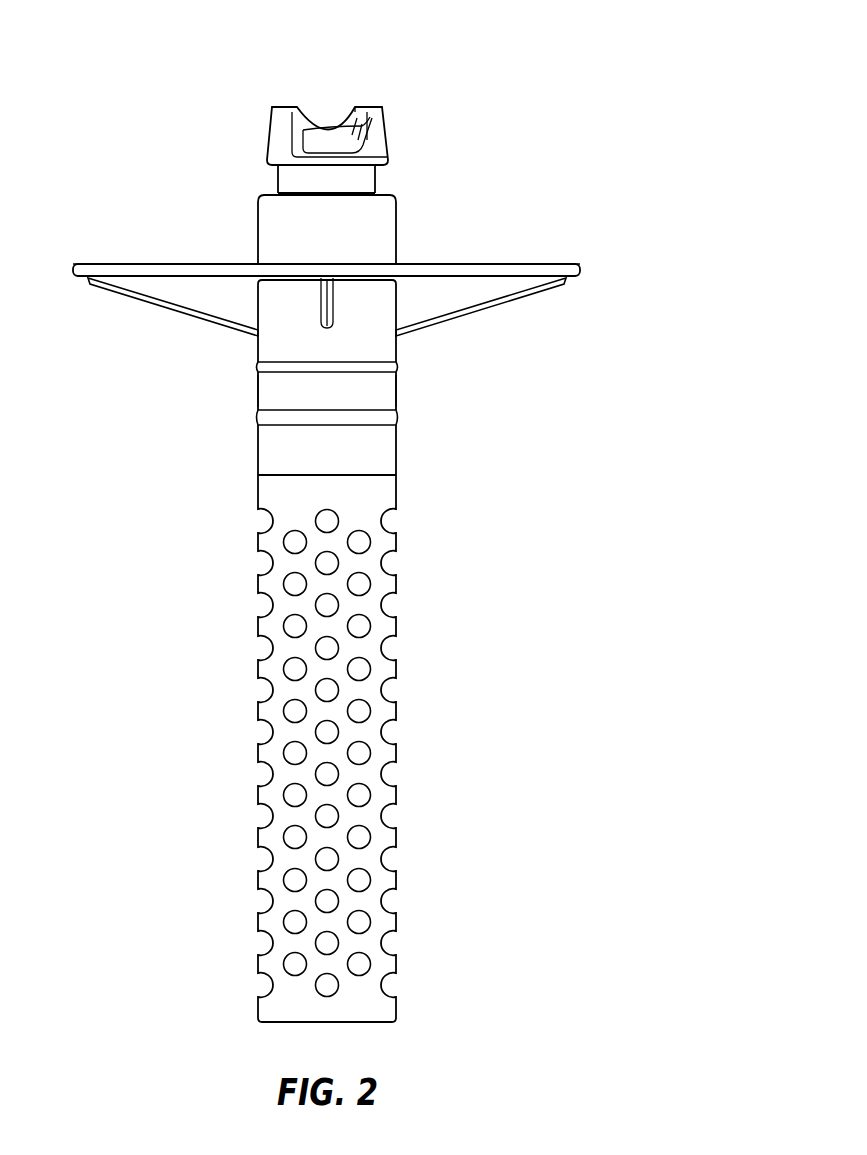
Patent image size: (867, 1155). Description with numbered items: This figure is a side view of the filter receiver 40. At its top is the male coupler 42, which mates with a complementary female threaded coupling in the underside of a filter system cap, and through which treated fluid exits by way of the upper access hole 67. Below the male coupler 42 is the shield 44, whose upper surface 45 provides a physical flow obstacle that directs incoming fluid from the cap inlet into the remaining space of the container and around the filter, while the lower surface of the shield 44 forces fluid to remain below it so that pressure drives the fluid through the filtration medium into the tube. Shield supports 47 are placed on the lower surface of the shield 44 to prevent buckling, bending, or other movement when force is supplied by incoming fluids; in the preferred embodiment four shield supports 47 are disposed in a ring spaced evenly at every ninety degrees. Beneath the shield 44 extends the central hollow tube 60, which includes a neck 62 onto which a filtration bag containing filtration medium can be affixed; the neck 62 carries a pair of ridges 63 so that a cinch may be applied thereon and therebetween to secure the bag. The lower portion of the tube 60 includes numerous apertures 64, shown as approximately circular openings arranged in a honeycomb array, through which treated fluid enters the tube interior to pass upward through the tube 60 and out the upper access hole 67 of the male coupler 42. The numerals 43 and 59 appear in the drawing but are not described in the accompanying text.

The filter receiver 40 is at (119, 121).
The male coupler 42 is at (392, 118).
The upper access hole 67 is at (327, 107).
The neck 43 is at (377, 182).
The upper surface 45 is at (495, 265).
The shield 44 is at (534, 266).
The shield supports 47 is at (125, 298).
The neck 62 is at (313, 383).
The ridges 63 is at (258, 366).
The body segment 59 is at (397, 390).
The central hollow tube 60 is at (309, 748).
The apertures 64 is at (393, 522).